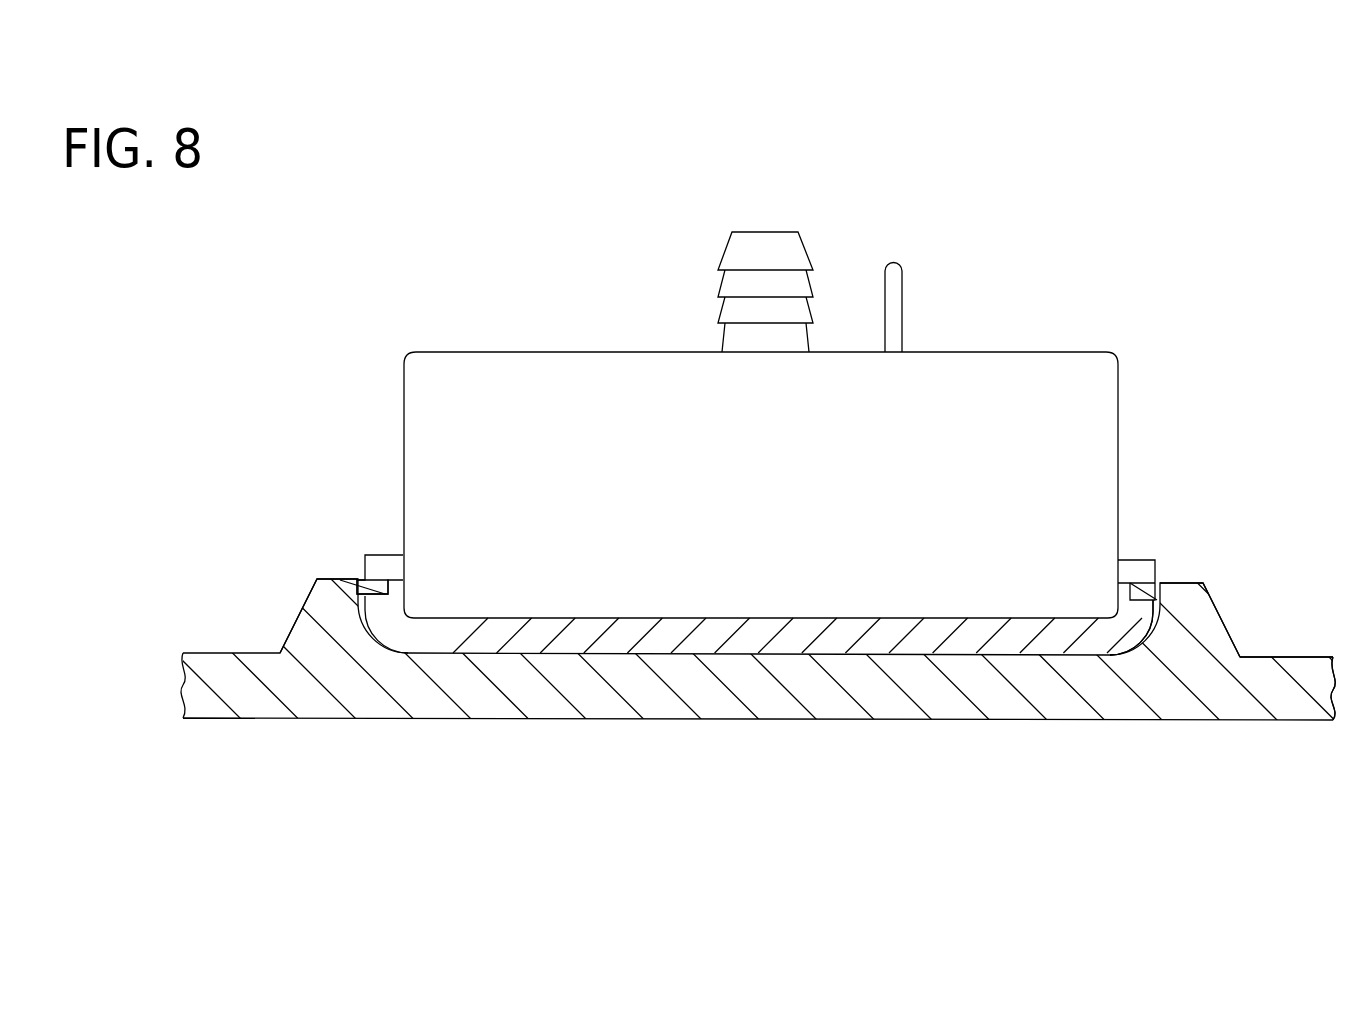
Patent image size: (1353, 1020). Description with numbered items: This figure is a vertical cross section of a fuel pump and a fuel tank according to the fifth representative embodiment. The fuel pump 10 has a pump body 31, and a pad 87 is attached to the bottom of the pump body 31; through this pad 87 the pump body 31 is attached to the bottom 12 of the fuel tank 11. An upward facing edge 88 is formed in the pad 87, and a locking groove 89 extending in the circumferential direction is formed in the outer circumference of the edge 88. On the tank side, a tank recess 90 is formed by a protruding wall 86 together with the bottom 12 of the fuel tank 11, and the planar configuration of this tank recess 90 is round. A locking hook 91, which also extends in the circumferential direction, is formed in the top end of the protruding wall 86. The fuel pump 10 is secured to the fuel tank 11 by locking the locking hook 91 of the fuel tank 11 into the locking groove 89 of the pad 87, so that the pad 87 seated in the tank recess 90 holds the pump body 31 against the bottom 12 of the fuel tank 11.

The fuel pump 10 is at (727, 510).
The fuel tank 11 is at (957, 722).
The bottom 12 is at (1265, 657).
The pump body 31 is at (372, 430).
The protruding wall 86 is at (330, 586).
The pad 87 is at (1123, 560).
The upward facing edge 88 is at (343, 584).
The locking groove 89 is at (388, 592).
The tank recess 90 is at (482, 653).
The locking hook 91 is at (380, 590).